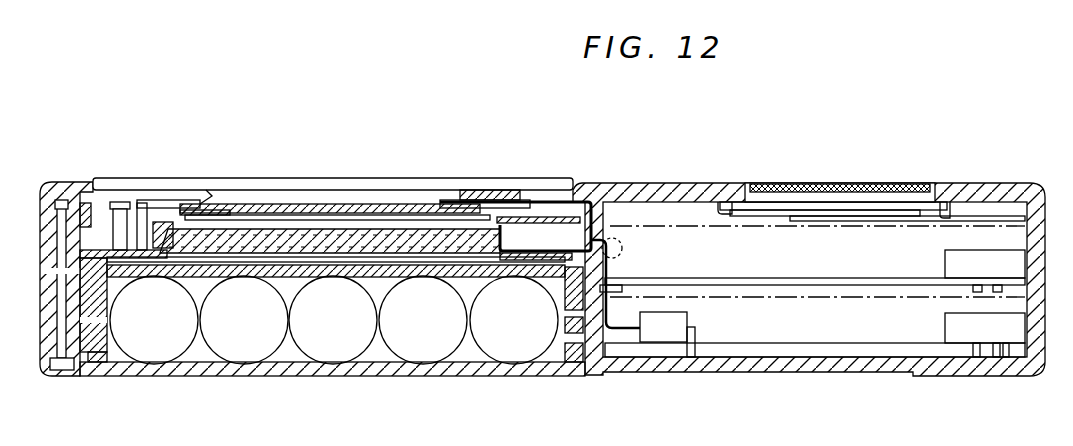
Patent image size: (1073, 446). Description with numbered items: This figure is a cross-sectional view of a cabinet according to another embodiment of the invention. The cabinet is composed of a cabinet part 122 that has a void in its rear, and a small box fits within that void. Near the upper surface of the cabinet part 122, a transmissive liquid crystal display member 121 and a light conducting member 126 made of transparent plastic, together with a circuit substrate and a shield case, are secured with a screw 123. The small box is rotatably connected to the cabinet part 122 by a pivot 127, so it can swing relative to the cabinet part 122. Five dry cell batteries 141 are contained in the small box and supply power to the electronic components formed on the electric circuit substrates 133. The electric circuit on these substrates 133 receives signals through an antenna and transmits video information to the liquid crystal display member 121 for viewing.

The transmissive liquid crystal display member 121 is at (398, 213).
The cabinet part 122 is at (618, 192).
The screw 123 is at (118, 201).
The light conducting member 126 is at (442, 245).
The pivot 127 is at (120, 360).
The electric circuit substrates 133 is at (837, 278).
The dry cell batteries 141 is at (315, 343).